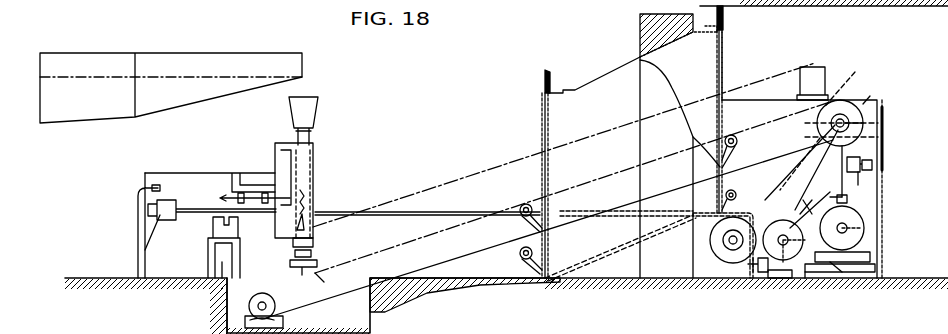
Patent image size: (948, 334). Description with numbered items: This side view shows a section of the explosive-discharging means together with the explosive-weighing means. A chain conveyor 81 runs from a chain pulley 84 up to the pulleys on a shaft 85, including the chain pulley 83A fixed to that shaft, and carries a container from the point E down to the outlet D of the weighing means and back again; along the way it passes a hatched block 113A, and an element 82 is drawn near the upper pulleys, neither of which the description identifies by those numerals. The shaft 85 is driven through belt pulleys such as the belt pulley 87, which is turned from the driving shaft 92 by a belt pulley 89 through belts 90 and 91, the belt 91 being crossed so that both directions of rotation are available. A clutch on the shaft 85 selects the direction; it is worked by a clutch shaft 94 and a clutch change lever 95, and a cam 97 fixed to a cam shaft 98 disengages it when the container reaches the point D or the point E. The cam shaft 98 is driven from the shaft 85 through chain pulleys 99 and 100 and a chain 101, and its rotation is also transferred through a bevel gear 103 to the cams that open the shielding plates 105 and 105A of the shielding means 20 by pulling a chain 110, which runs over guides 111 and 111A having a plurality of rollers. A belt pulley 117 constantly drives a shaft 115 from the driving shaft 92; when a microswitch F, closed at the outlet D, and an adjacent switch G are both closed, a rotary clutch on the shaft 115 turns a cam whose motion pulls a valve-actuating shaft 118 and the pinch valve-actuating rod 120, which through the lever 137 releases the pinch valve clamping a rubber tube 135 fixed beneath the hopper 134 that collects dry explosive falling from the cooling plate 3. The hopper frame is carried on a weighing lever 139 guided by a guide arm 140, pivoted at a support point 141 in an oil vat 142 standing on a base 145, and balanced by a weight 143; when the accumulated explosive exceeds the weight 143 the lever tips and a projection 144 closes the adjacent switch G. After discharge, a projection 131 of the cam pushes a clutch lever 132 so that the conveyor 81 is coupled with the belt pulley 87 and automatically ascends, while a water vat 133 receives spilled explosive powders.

The cooling plate 3 is at (266, 53).
The hopper 134 is at (306, 108).
The guide arm 140 is at (282, 150).
The rubber tube 135 is at (305, 168).
The pinch valve-actuating lever 137 is at (306, 192).
The explosive-discharging outlet D is at (324, 282).
The weighing lever 139 is at (213, 190).
The pinch valve-actuating rod 120 is at (252, 193).
The adjacent switch G is at (152, 186).
The projection 144 is at (148, 212).
The weight 143 is at (145, 250).
The support point 141 is at (222, 225).
The oil vat 142 is at (222, 262).
The base 145 is at (227, 290).
The water vat 133 is at (398, 298).
The chain pulley 84 is at (274, 304).
The chain conveyor 81 is at (456, 203).
The valve-actuating shaft 118 is at (408, 212).
The shielding plate 105A is at (540, 148).
The guide 111A is at (545, 75).
The projection 131 is at (748, 165).
The block 113A is at (640, 33).
The shielding means 20 is at (722, 52).
The guide 111 is at (723, 14).
The bevel gear 103 is at (838, 6).
The shielding plate 105 is at (722, 90).
The block 82 is at (813, 67).
The belt pulley 87 is at (850, 103).
The point E is at (844, 78).
The chain pulley 83A is at (863, 104).
The chain pulley 99 is at (863, 123).
The shaft 85 is at (866, 160).
The clutch change lever 95 is at (884, 140).
The clutch shaft 94 is at (860, 180).
The cam 97 is at (848, 198).
The belt 91 is at (776, 170).
The belt 90 is at (800, 163).
The cam shaft 98 is at (850, 240).
The chain pulley 100 is at (862, 242).
The chain 101 is at (864, 228).
The microswitch F is at (832, 265).
The clutch lever 132 is at (808, 270).
The belt pulley 89 is at (715, 252).
The driving shaft 92 is at (733, 250).
The belt pulley 117 is at (756, 266).
The chain 110 is at (783, 250).
The shaft 115 is at (785, 275).